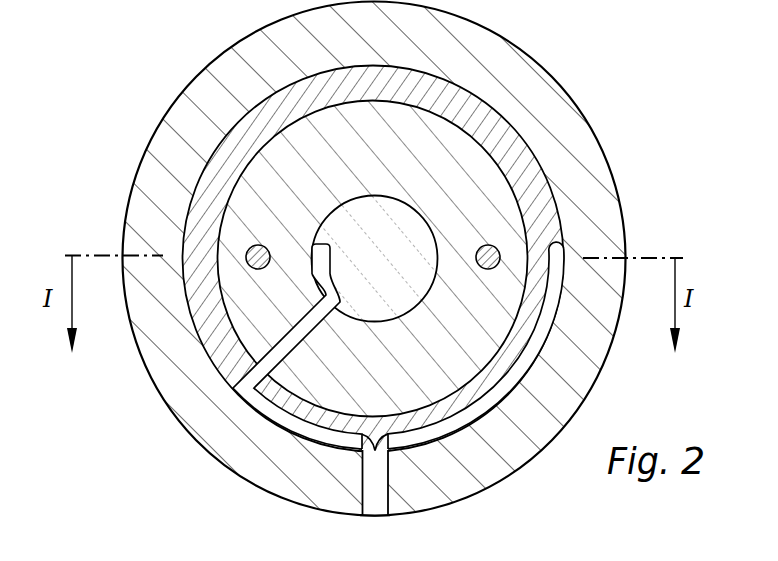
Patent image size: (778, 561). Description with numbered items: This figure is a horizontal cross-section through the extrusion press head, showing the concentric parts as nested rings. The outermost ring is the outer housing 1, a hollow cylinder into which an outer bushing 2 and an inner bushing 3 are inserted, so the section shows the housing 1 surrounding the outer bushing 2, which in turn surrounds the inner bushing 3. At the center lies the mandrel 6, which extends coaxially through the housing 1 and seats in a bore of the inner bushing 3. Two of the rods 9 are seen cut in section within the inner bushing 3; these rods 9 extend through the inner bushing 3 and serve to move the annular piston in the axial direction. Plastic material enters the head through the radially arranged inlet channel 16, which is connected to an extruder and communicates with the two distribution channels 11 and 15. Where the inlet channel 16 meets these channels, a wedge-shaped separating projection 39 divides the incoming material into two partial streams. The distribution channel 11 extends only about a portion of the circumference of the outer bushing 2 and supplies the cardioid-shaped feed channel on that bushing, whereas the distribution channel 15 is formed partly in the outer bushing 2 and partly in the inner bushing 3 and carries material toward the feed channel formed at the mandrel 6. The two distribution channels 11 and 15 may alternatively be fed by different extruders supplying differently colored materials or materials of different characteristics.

The outer housing 1 is at (520, 436).
The outer bushing 2 is at (524, 158).
The inner bushing 3 is at (272, 173).
The mandrel 6 is at (376, 214).
The rods 9 is at (258, 246).
The distribution channel 11 is at (451, 428).
The distribution channel 15 is at (310, 433).
The inlet channel 16 is at (382, 512).
The wedge-shaped separating projection 39 is at (376, 438).